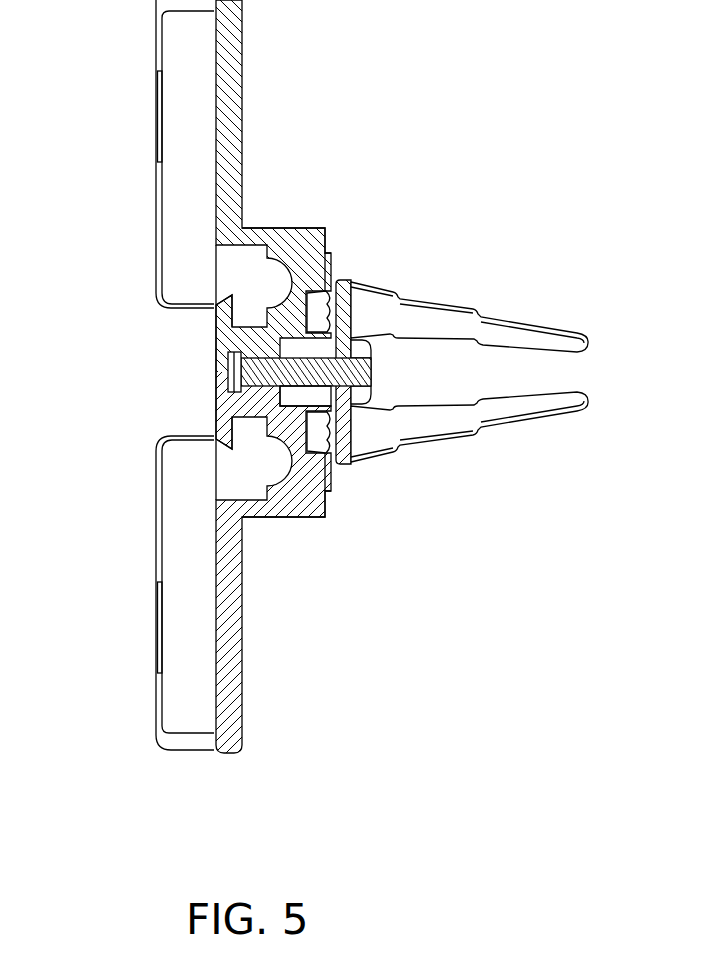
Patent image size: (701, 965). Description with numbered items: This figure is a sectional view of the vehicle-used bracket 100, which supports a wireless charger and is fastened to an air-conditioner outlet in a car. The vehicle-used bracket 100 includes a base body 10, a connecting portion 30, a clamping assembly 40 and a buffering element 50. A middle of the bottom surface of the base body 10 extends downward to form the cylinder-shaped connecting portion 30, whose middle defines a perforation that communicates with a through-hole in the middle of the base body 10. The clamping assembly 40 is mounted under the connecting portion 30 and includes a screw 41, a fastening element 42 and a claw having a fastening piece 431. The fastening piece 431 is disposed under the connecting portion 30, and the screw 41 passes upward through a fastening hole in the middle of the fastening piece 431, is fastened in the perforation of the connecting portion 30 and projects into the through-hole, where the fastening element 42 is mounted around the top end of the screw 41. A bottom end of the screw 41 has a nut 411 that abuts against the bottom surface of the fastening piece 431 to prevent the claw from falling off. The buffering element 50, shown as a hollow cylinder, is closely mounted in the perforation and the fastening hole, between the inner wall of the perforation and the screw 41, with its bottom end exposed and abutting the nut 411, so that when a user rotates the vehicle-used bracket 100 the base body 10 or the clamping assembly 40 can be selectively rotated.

The vehicle-used bracket 100 is at (122, 158).
The base body 10 is at (273, 33).
The connecting portion 30 is at (295, 226).
The clamping assembly 40 is at (435, 463).
The screw 41 is at (285, 377).
The nut 411 is at (367, 353).
The fastening element 42 is at (220, 338).
The fastening piece 431 is at (328, 452).
The buffering element 50 is at (300, 397).